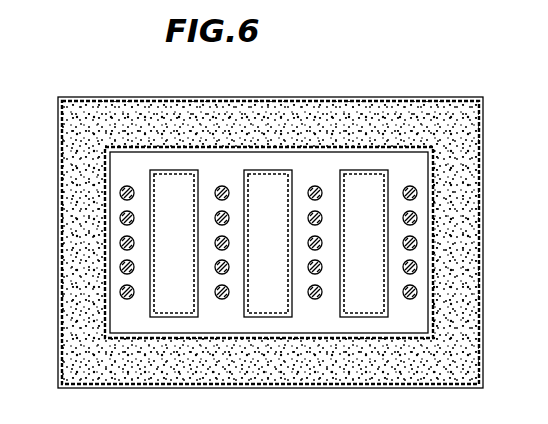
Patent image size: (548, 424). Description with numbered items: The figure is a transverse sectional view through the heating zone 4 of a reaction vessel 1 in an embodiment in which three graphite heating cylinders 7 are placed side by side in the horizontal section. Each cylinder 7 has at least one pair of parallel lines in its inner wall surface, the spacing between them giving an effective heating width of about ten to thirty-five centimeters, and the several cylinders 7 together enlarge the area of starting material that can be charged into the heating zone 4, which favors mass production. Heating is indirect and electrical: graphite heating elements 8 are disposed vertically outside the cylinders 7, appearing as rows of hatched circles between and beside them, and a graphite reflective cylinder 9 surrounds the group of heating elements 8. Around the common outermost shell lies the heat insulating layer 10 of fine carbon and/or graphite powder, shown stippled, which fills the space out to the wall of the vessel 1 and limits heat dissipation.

The reaction vessel 1 is at (472, 93).
The heating zone 4 is at (182, 244).
The graphite cylinder 7 is at (264, 172).
The graphite heating element 8 is at (125, 291).
The graphite reflective cylinder 9 is at (433, 318).
The heat insulating layer 10 is at (348, 118).